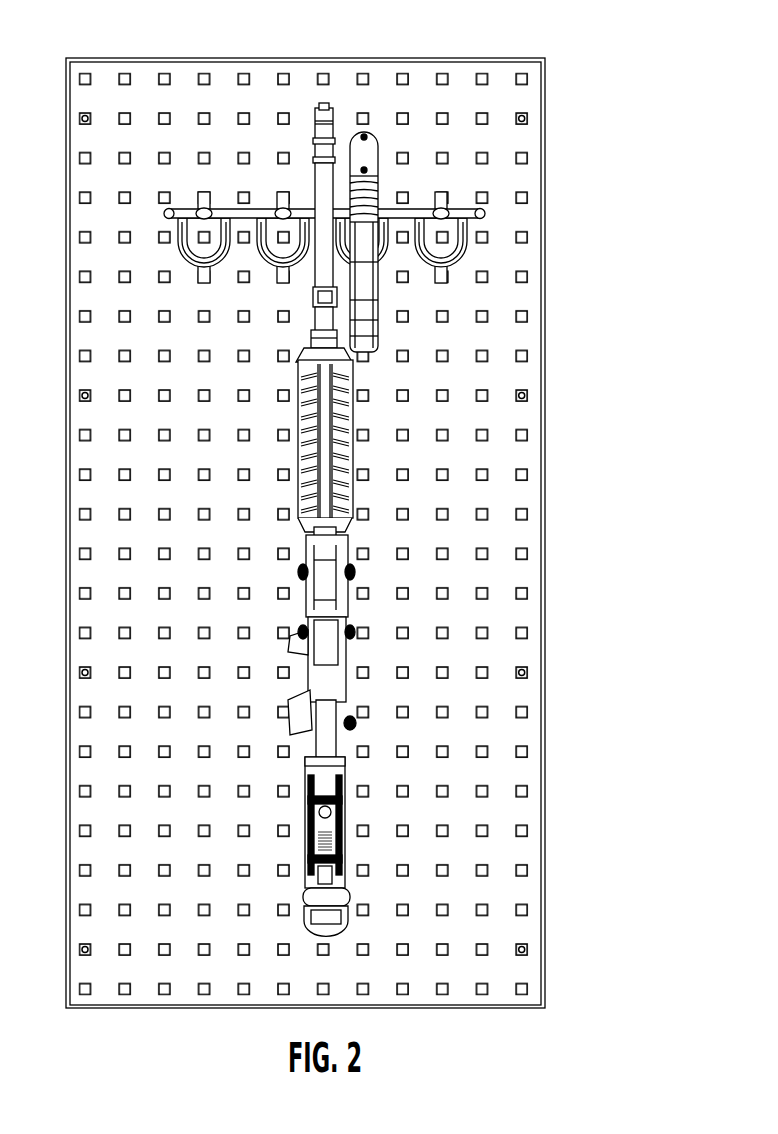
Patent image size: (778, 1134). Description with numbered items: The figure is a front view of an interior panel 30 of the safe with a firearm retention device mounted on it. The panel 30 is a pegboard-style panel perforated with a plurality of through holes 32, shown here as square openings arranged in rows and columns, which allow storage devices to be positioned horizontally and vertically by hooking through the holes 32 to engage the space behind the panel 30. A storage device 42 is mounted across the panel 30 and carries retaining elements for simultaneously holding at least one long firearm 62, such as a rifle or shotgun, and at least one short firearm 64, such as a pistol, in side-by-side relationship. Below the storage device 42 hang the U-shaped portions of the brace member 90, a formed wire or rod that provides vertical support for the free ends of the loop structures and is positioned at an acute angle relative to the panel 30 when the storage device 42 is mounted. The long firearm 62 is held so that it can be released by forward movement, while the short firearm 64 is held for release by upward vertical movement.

The interior panel 30 is at (546, 578).
The through holes 32 is at (488, 718).
The storage device 42 is at (472, 207).
The brace member 90 is at (473, 247).
The short firearm 64 is at (382, 158).
The long firearm 62 is at (346, 849).